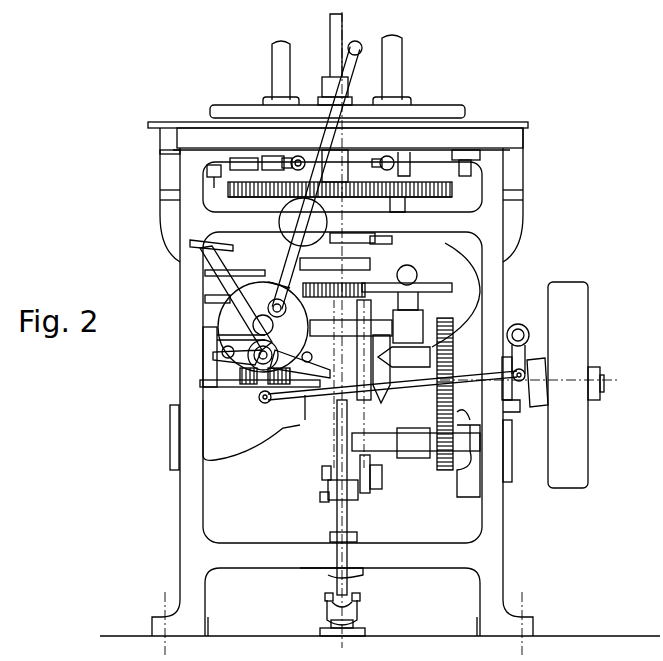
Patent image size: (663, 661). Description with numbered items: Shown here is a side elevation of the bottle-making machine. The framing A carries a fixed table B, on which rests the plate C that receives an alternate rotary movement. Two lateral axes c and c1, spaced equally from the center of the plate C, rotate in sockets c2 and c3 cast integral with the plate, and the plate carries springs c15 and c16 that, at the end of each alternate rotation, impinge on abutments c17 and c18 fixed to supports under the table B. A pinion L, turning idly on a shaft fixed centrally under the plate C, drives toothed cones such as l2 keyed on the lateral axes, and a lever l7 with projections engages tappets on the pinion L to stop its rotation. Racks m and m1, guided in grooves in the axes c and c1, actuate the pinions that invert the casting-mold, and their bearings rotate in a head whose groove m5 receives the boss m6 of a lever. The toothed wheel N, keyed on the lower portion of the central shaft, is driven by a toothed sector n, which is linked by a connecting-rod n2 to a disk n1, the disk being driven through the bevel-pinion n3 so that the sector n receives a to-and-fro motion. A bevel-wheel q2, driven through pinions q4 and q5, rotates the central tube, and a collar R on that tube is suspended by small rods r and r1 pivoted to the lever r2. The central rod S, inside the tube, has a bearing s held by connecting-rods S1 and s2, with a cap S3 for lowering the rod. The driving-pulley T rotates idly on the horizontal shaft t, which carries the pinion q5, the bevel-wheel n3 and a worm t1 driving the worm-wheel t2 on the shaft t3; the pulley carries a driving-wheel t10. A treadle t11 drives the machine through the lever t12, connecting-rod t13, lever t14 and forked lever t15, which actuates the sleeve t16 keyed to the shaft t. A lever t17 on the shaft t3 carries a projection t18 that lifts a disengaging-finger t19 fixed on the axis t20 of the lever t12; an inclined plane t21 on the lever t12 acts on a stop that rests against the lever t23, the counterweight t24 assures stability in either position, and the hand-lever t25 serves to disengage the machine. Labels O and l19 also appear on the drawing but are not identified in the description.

The framing A is at (488, 227).
The fixed table B is at (204, 136).
The plate C is at (466, 111).
The lateral axis c is at (281, 73).
The lateral axis c1 is at (392, 70).
The pinion L is at (335, 98).
The hand-lever t25 is at (362, 46).
The counterweight t24 is at (290, 224).
The lever t23 is at (288, 310).
The lever l7 is at (280, 280).
The abutment c17 is at (270, 160).
The socket c3 is at (296, 151).
The spring c16 is at (262, 172).
The abutment c18 is at (414, 158).
The socket c2 is at (412, 172).
The spring c15 is at (205, 180).
The worm t1 is at (262, 396).
The toothed cone l2 is at (334, 281).
The rack m is at (280, 204).
The rack m1 is at (410, 205).
The groove m5 is at (337, 265).
The boss m6 is at (381, 289).
The horizontal shaft t3 is at (382, 251).
The disk n1 is at (418, 278).
The connecting-rod n2 is at (415, 265).
The toothed sector n is at (405, 348).
The bevel-pinion n3 is at (385, 398).
The connecting-rod t13 is at (353, 385).
The lever t17 is at (250, 330).
The projection t18 is at (248, 352).
The treadle t11 is at (200, 262).
The toothed wheel N is at (215, 282).
The guide block l19 is at (215, 312).
The disengaging-finger t19 is at (240, 389).
The inclined plane t21 is at (286, 368).
The horizontal shaft t is at (392, 393).
The lever t12 is at (268, 404).
The axis t20 is at (290, 410).
The vertical spindle O is at (340, 445).
The lever r2 is at (325, 476).
The small rod r is at (325, 488).
The collar R is at (318, 495).
The worm-wheel t2 is at (362, 469).
The small rod r1 is at (391, 480).
The bevel-wheel q2 is at (416, 455).
The pinion q5 is at (454, 352).
The pinion q4 is at (457, 453).
The forked lever t15 is at (510, 365).
The lever t14 is at (524, 340).
The driving-wheel t10 is at (540, 375).
The sleeve t16 is at (522, 412).
The driving-pulley T is at (580, 328).
The central rod S is at (350, 583).
The connecting-rod S1 is at (327, 598).
The connecting-rod s2 is at (360, 606).
The cap S3 is at (332, 615).
The bearing s is at (333, 634).